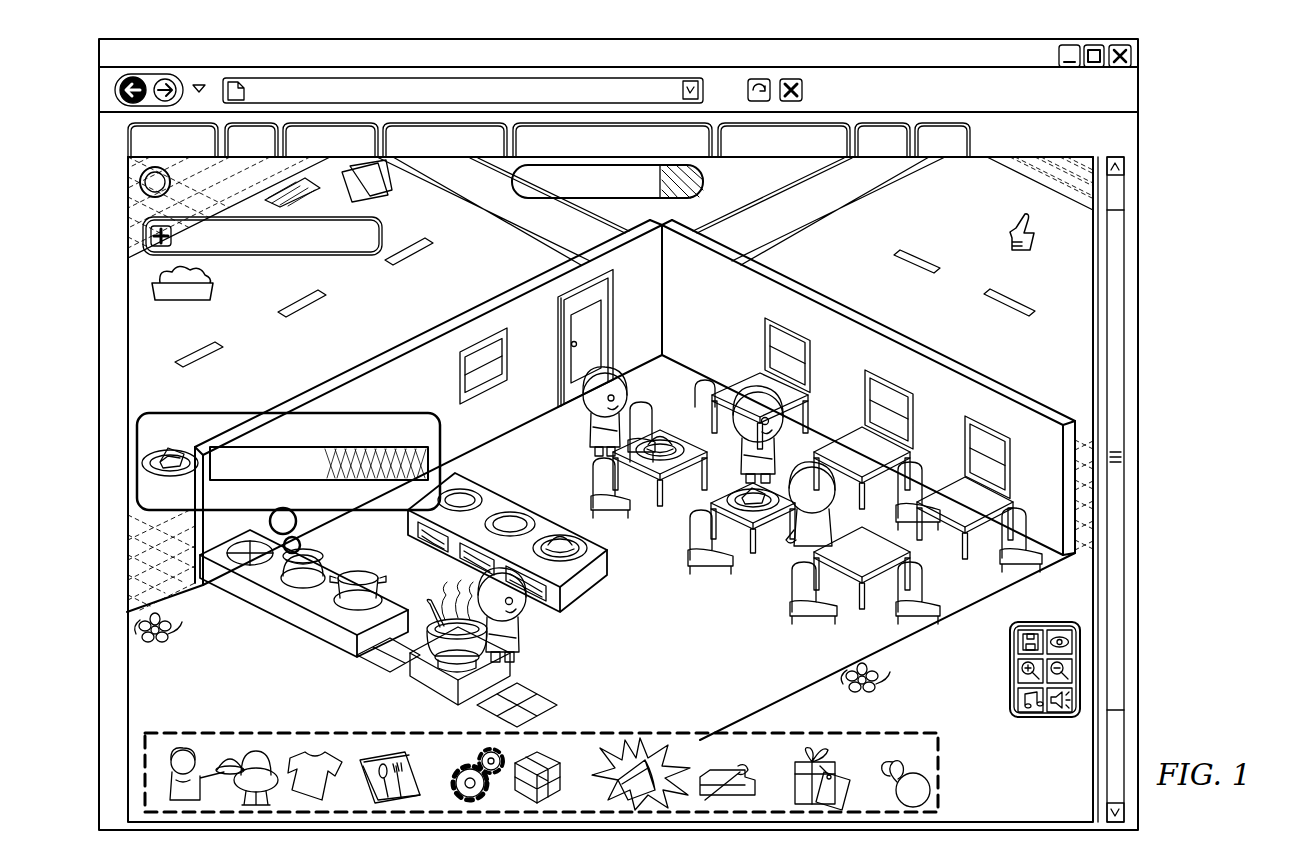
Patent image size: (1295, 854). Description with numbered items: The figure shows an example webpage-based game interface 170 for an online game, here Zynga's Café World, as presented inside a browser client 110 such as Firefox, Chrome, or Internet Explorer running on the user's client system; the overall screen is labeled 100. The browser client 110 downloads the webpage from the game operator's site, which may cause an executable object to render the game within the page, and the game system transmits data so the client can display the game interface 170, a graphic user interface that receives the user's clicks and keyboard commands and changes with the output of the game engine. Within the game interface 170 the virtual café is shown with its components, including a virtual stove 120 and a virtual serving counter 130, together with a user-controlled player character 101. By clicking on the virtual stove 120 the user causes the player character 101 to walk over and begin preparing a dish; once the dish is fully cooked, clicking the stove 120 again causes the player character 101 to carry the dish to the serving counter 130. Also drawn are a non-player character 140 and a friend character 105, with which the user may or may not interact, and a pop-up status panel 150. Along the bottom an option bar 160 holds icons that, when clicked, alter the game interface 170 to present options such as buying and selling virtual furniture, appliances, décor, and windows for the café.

The user interface screen 100 is at (1206, 594).
The browser client 110 is at (1138, 92).
The game interface 170 is at (1074, 347).
The cooking status pop-up 150 is at (228, 413).
The non-player character 140 is at (582, 418).
The virtual serving counter 130 is at (552, 518).
The virtual stove 120 is at (396, 598).
The player character 101 is at (537, 638).
The friend character 105 is at (757, 392).
The option bar 160 is at (220, 733).